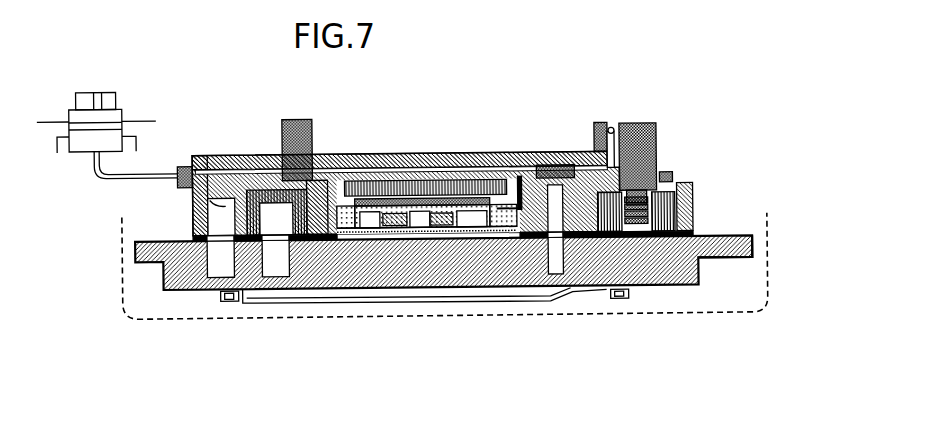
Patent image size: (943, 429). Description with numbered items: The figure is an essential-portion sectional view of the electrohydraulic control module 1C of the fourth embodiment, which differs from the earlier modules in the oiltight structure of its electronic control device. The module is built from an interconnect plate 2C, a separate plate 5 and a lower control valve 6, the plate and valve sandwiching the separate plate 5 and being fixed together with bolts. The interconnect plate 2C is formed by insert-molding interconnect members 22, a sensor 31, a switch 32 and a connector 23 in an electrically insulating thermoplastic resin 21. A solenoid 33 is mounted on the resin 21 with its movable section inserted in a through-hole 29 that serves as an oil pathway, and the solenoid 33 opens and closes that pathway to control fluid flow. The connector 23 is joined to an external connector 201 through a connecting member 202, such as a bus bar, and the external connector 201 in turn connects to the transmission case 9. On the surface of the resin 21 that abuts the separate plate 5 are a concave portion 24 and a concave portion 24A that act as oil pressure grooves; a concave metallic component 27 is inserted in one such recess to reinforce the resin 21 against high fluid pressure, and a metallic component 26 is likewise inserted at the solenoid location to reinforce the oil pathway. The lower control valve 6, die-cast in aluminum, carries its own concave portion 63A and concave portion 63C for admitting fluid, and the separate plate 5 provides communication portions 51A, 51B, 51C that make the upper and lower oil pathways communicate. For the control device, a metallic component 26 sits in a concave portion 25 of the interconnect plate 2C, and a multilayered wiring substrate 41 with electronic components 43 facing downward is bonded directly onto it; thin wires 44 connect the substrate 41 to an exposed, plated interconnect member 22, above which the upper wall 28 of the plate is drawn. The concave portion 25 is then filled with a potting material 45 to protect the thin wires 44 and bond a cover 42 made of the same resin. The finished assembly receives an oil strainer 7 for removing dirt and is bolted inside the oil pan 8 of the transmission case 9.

The electrohydraulic control module 1C is at (590, 61).
The interconnect plate 2C is at (421, 227).
The separate plate 5 is at (450, 263).
The lower control valve 6 is at (752, 234).
The oil strainer 7 is at (577, 308).
The oil pan 8 is at (768, 268).
The transmission case 9 is at (50, 116).
The resin 21 is at (240, 153).
The interconnect member 22 is at (210, 154).
The connector 23 is at (187, 164).
The concave portion 24 is at (588, 154).
The concave portion 24A is at (193, 209).
The concave portion 25 is at (340, 152).
The second coil 26 is at (455, 178).
The concave metallic component 27 is at (273, 176).
The top plate 28 is at (505, 153).
The through-hole 29 is at (637, 232).
The sensor 31 is at (305, 117).
The switch 32 is at (558, 166).
The solenoid 33 is at (657, 137).
The multilayered wiring substrate 41 is at (441, 179).
The cover 42 is at (386, 232).
The electronic component 43 is at (400, 232).
The thin wire 44 is at (356, 239).
The potting material 45 is at (462, 232).
The communication portion 51A is at (221, 243).
The communication portion 51B is at (285, 245).
The communication portion 51C is at (555, 248).
The concave portion 63A is at (175, 290).
The concave portion 63C is at (548, 301).
The external connector 201 is at (123, 107).
The connecting member 202 is at (113, 176).